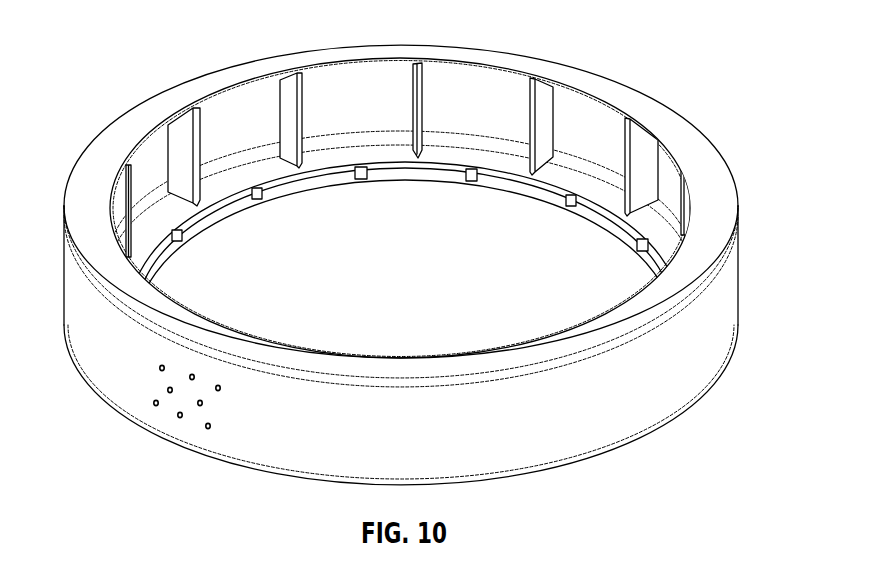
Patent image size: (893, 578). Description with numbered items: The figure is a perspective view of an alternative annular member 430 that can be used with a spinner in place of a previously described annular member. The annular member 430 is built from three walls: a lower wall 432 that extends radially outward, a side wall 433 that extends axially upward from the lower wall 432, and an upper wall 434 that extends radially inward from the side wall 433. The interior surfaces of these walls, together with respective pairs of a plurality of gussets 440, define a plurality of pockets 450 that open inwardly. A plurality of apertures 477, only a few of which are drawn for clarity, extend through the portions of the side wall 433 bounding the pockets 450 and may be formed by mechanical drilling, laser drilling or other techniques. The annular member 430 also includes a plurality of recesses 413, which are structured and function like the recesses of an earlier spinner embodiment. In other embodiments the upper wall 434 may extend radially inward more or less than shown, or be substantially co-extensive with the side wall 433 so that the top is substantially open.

The annular member 430 is at (693, 121).
The lower wall 432 is at (270, 172).
The side wall 433 is at (730, 272).
The upper wall 434 is at (338, 368).
The recesses 413 is at (359, 181).
The gussets 440 is at (200, 115).
The pockets 450 is at (267, 90).
The apertures 477 is at (145, 350).